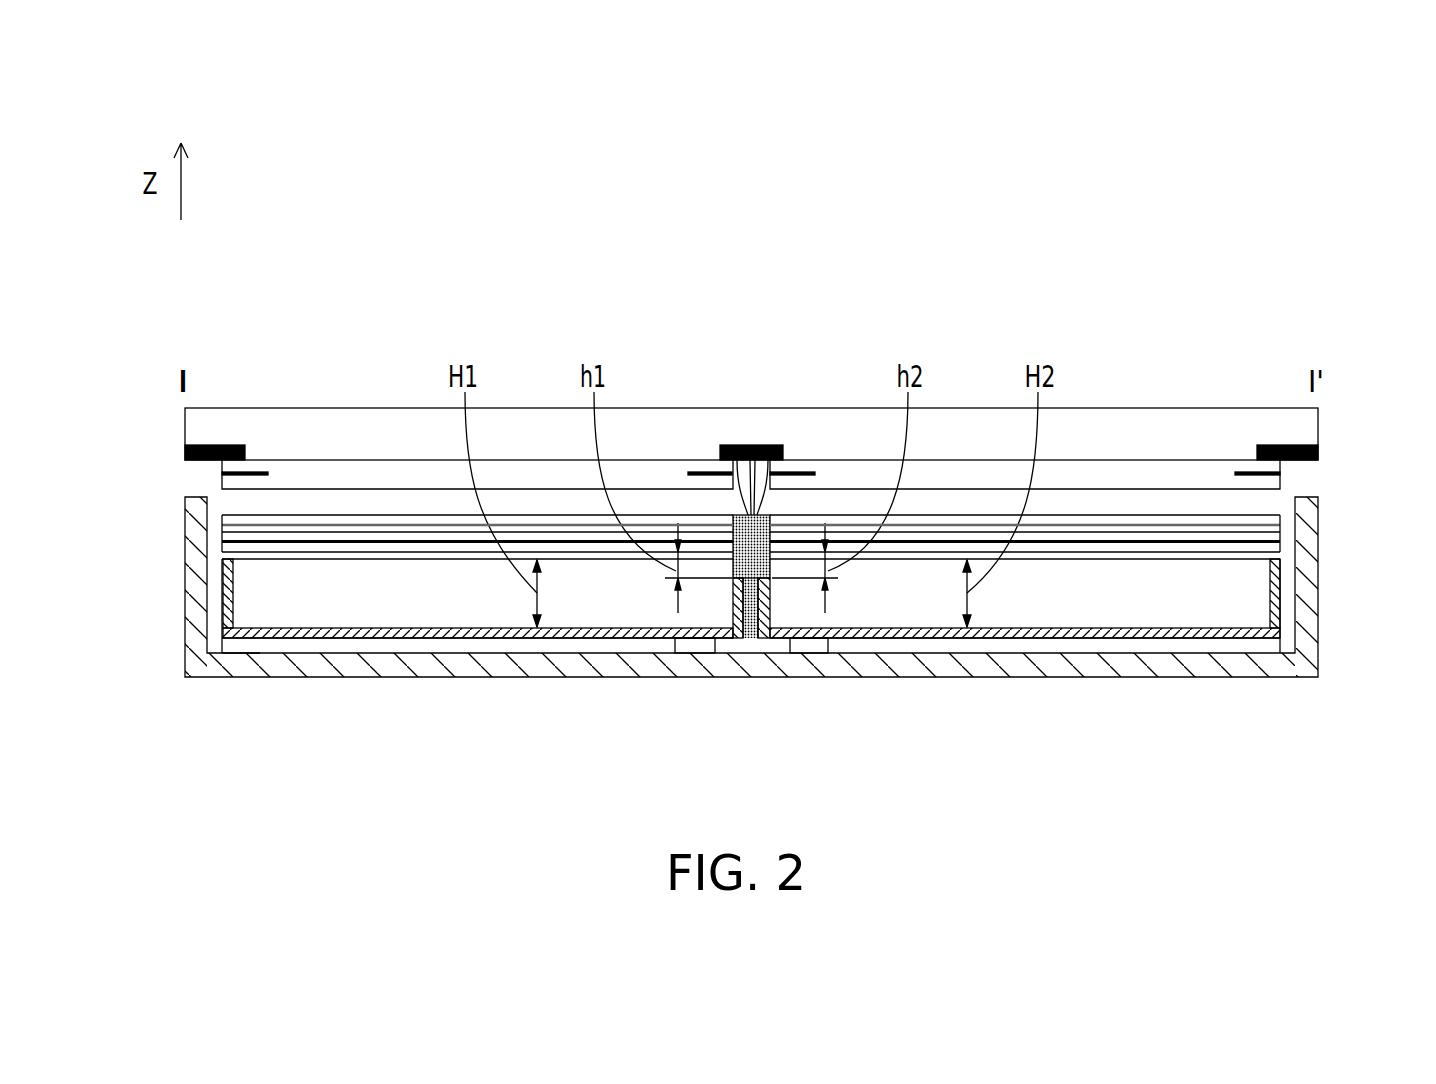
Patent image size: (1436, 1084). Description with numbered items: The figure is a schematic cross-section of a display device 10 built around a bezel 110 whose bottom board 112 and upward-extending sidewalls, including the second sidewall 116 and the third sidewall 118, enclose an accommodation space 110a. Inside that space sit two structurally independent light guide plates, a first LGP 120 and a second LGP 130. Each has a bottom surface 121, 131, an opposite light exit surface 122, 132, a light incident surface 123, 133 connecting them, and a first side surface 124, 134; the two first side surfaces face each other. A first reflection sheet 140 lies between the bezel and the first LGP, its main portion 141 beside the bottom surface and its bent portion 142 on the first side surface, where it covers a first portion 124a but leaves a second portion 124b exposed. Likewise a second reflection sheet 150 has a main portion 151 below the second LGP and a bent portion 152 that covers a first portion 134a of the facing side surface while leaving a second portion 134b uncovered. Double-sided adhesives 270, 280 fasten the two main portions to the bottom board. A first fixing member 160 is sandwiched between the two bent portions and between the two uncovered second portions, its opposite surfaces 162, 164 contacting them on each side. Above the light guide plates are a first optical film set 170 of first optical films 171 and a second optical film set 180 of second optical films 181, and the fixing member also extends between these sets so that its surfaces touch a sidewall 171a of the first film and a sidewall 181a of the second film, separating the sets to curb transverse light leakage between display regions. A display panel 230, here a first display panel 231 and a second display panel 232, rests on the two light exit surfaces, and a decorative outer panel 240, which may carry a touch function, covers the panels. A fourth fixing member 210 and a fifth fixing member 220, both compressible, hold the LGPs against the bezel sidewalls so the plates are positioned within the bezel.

The display device 10 is at (1360, 804).
The bezel 110 is at (752, 620).
The accommodation space 110a is at (247, 651).
The bottom board 112 is at (497, 662).
The second sidewall 116 is at (197, 643).
The third sidewall 118 is at (1305, 643).
The first LGP 120 is at (347, 605).
The bottom surface 121 is at (283, 631).
The light exit surface 122 is at (283, 558).
The light incident surface 123 is at (231, 597).
The first side surface 124 is at (743, 767).
The first portion 124a is at (737, 640).
The second portion 124b is at (745, 640).
The second LGP 130 is at (1155, 603).
The bottom surface 131 is at (1220, 631).
The light exit surface 132 is at (1221, 558).
The light incident surface 133 is at (1272, 597).
The first side surface 134 is at (872, 767).
The first portion 134a is at (765, 640).
The second portion 134b is at (758, 640).
The first reflection sheet 140 is at (395, 113).
The main portion 141 is at (428, 705).
The bent portion 142 is at (603, 705).
The second reflection sheet 150 is at (690, 113).
The main portion 151 is at (1073, 705).
The bent portion 152 is at (900, 705).
The first fixing member 160 is at (754, 445).
The surface 162 is at (733, 543).
The surface 164 is at (772, 543).
The first optical film set 170 is at (399, 522).
The first optical film 171 is at (222, 548).
The sidewall 171a is at (727, 445).
The second optical film set 180 is at (1103, 522).
The second optical film 181 is at (1280, 548).
The sidewall 181a is at (775, 445).
The fourth fixing member 210 is at (1287, 620).
The fifth fixing member 220 is at (215, 620).
The display panel 230 is at (538, 113).
The first display panel 231 is at (167, 467).
The second display panel 232 is at (1340, 467).
The decorative outer panel 240 is at (185, 429).
The double-sided adhesive 270 is at (683, 645).
The double-sided adhesive 280 is at (818, 645).